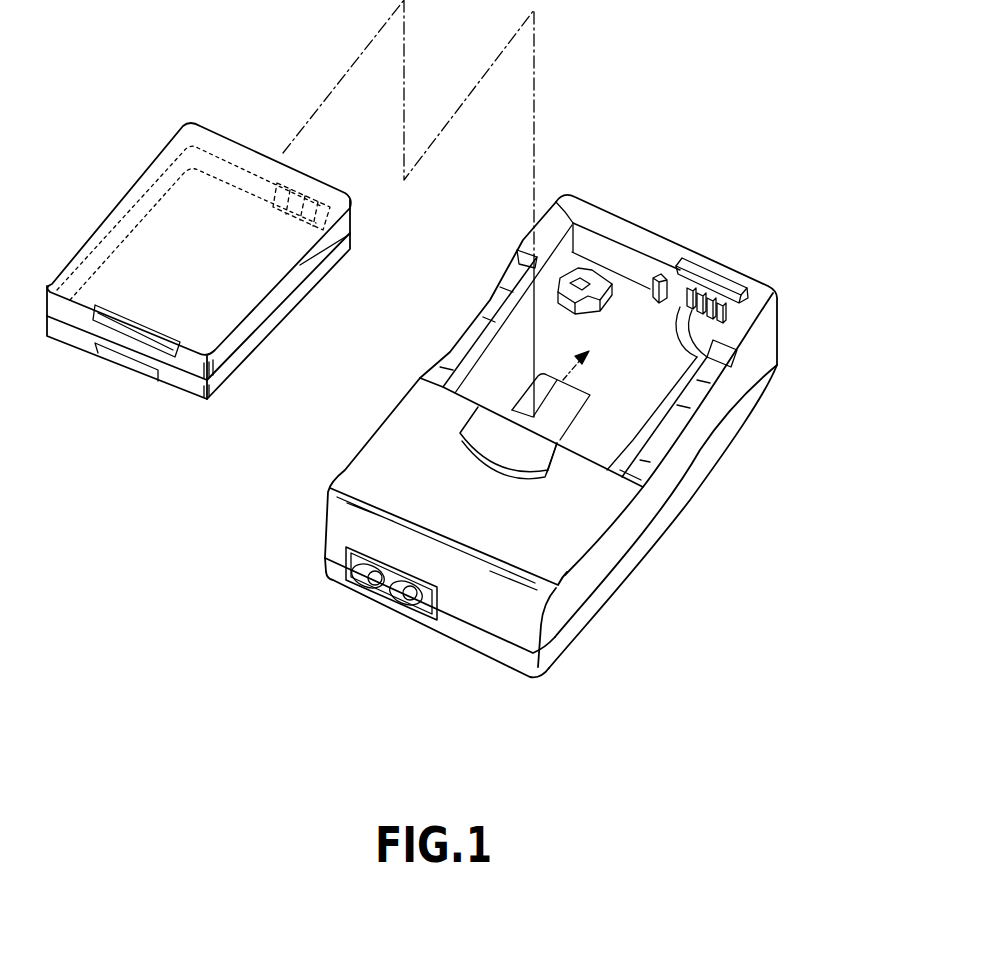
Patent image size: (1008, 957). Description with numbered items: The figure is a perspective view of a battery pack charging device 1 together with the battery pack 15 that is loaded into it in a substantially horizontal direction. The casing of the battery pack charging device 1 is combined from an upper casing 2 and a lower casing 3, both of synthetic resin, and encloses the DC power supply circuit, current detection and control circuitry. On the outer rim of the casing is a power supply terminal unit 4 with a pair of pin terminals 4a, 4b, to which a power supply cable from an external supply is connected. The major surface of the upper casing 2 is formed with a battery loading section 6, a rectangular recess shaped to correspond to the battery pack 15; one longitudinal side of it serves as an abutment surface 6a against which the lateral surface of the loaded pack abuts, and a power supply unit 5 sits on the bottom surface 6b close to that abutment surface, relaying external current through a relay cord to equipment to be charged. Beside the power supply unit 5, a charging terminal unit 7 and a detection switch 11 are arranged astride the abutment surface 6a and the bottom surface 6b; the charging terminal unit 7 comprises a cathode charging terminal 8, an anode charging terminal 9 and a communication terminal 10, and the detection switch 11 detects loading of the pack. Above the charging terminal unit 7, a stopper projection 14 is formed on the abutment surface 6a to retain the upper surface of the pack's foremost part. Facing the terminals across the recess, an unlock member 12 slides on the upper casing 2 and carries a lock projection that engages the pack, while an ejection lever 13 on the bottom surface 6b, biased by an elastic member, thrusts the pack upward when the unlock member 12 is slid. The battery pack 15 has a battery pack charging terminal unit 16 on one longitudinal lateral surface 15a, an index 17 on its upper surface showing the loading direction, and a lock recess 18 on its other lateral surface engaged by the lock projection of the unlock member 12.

The battery pack charging device 1 is at (772, 256).
The upper casing 2 is at (770, 327).
The lower casing 3 is at (712, 457).
The power supply terminal unit 4 is at (364, 628).
The pin terminal 4a is at (363, 589).
The pin terminal 4b is at (371, 611).
The power supply unit 5 is at (594, 280).
The battery loading section 6 is at (593, 430).
The abutment surface 6a is at (622, 266).
The bottom surface 6b is at (626, 388).
The charging terminal unit 7 is at (790, 365).
The cathode charging terminal 8 is at (723, 320).
The anode charging terminal 9 is at (735, 305).
The communication terminal 10 is at (727, 313).
The detection switch 11 is at (658, 258).
The unlock member 12 is at (488, 437).
The ejection lever 13 is at (517, 413).
The stopper projection 14 is at (703, 272).
The battery pack 15 is at (147, 142).
The longitudinal lateral surface 15a is at (352, 208).
The battery pack charging terminal unit 16 is at (313, 187).
The index 17 is at (270, 178).
The lock recess 18 is at (125, 362).